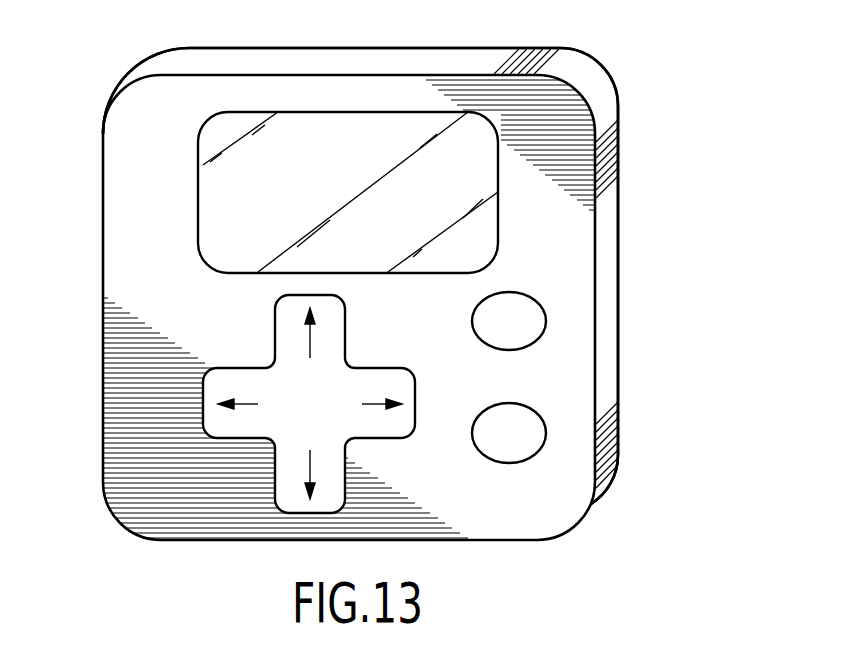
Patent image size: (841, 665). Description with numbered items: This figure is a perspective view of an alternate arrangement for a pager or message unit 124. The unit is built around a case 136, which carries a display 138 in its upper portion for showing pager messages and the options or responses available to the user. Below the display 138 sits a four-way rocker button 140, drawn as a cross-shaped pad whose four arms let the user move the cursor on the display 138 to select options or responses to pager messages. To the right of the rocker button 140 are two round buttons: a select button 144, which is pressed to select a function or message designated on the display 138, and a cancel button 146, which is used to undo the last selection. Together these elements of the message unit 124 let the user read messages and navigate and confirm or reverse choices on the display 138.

The pager or message unit 124 is at (739, 304).
The case 136 is at (604, 109).
The display 138 is at (385, 124).
The four-way rocker button 140 is at (215, 411).
The select button 144 is at (546, 325).
The cancel button 146 is at (546, 433).